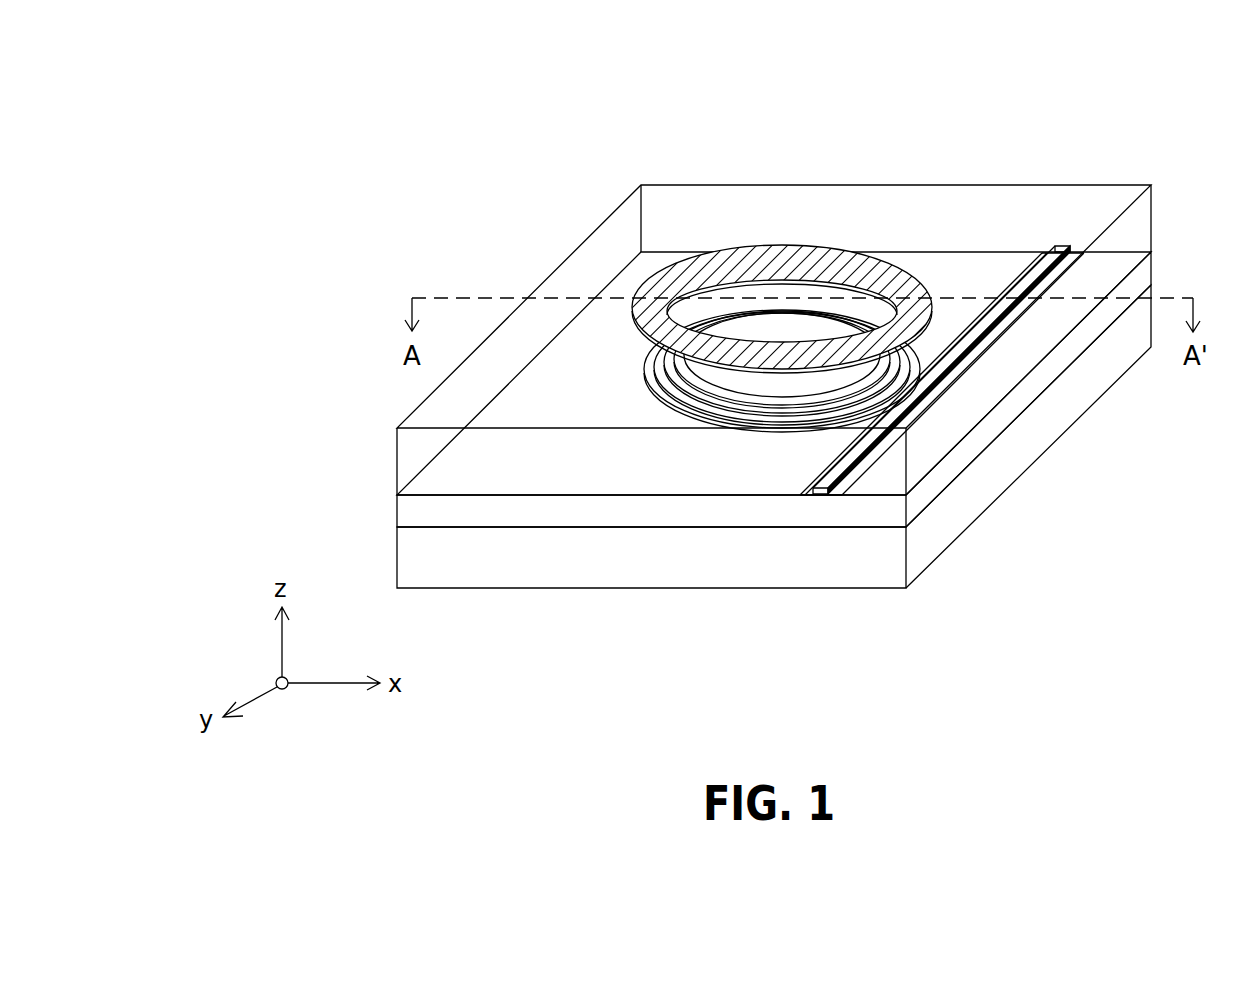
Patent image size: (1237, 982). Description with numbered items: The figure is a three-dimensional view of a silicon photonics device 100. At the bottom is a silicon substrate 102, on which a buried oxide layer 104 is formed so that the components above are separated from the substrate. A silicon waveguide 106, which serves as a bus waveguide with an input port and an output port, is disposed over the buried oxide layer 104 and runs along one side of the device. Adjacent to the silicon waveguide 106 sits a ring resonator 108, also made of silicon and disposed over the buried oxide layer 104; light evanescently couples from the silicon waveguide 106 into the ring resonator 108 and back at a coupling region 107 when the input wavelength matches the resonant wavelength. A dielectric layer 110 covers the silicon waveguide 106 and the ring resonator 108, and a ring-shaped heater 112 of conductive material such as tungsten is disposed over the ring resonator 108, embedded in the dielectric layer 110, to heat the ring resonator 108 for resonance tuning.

The silicon photonics device 100 is at (438, 121).
The silicon substrate 102 is at (875, 575).
The buried oxide layer 104 is at (413, 513).
The silicon waveguide 106 is at (851, 456).
The coupling region 107 is at (930, 378).
The ring resonator 108 is at (648, 374).
The dielectric layer 110 is at (413, 450).
The heater 112 is at (648, 285).